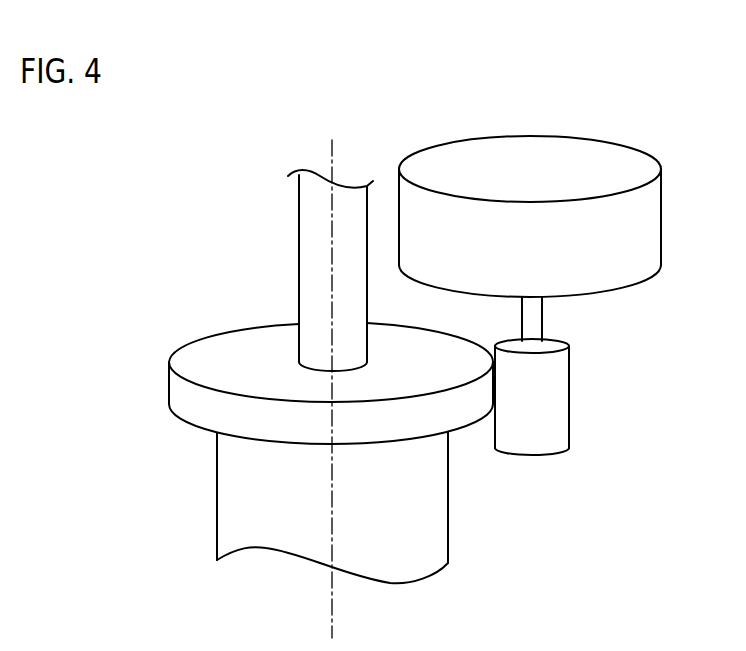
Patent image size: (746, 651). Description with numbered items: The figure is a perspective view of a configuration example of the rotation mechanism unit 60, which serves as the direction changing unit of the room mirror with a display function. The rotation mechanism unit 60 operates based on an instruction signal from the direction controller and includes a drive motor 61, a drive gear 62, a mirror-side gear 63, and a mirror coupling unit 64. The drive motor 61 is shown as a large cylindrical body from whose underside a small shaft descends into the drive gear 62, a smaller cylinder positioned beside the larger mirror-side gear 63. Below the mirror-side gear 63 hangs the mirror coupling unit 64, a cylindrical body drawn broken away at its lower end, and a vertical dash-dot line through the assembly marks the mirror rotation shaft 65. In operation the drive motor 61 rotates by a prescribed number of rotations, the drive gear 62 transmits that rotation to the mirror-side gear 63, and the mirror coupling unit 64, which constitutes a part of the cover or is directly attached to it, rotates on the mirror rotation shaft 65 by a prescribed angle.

The rotation mechanism unit 60 is at (450, 104).
The drive motor 61 is at (662, 228).
The drive gear 62 is at (569, 403).
The mirror-side gear 63 is at (169, 383).
The mirror coupling unit 64 is at (217, 496).
The mirror rotation shaft 65 is at (332, 602).